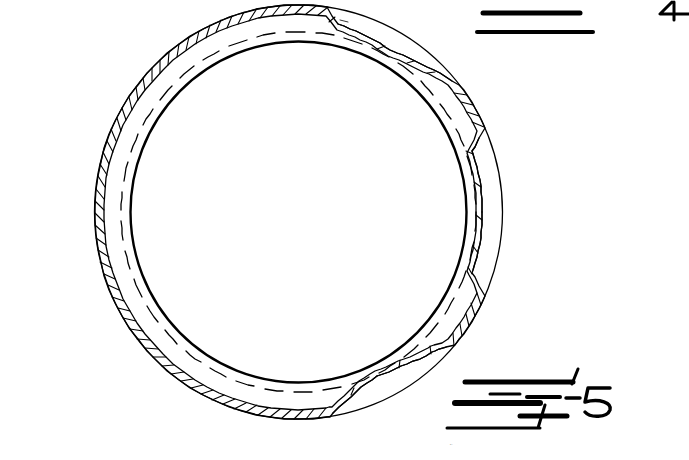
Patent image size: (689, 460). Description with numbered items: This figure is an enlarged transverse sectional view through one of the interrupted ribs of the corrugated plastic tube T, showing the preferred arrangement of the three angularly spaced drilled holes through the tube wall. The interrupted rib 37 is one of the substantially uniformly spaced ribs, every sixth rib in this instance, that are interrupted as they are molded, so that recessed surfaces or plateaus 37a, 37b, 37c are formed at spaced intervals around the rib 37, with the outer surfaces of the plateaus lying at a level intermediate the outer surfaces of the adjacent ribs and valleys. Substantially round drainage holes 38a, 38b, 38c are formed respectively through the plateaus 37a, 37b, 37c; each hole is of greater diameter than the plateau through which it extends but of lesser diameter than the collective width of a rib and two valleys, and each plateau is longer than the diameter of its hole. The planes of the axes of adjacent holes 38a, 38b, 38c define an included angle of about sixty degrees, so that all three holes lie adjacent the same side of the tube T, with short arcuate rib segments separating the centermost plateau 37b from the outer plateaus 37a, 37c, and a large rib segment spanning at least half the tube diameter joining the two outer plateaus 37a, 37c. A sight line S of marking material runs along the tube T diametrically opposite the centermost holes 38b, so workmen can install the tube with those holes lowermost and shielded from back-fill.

The corrugated plastic tube T is at (130, 345).
The sight line S is at (97, 200).
The interrupted rib 37 is at (257, 212).
The first outer plateau 37a is at (342, 24).
The centermost plateau 37b is at (478, 163).
The second outer plateau 37c is at (344, 402).
The first drainage hole 38a is at (381, 56).
The centermost drainage hole 38b is at (478, 221).
The third drainage hole 38c is at (396, 369).